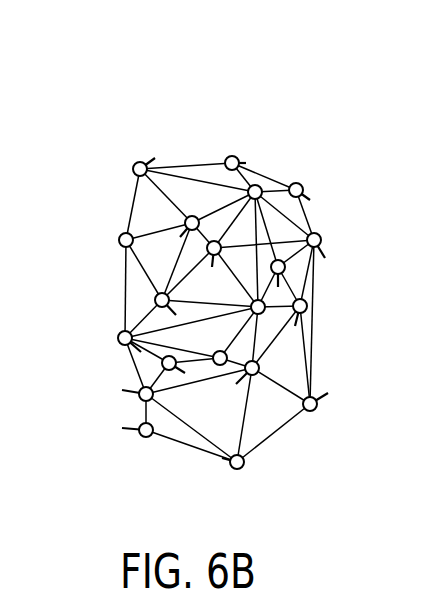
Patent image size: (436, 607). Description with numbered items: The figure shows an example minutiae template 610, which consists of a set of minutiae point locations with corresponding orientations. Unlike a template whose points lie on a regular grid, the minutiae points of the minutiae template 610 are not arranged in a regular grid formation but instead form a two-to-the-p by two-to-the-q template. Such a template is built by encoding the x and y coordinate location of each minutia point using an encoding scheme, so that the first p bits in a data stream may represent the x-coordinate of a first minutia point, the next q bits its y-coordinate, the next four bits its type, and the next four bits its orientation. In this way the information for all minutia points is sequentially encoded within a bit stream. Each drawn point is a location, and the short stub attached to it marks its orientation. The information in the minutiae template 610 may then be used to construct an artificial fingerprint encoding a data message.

The minutiae template 610 is at (93, 110).